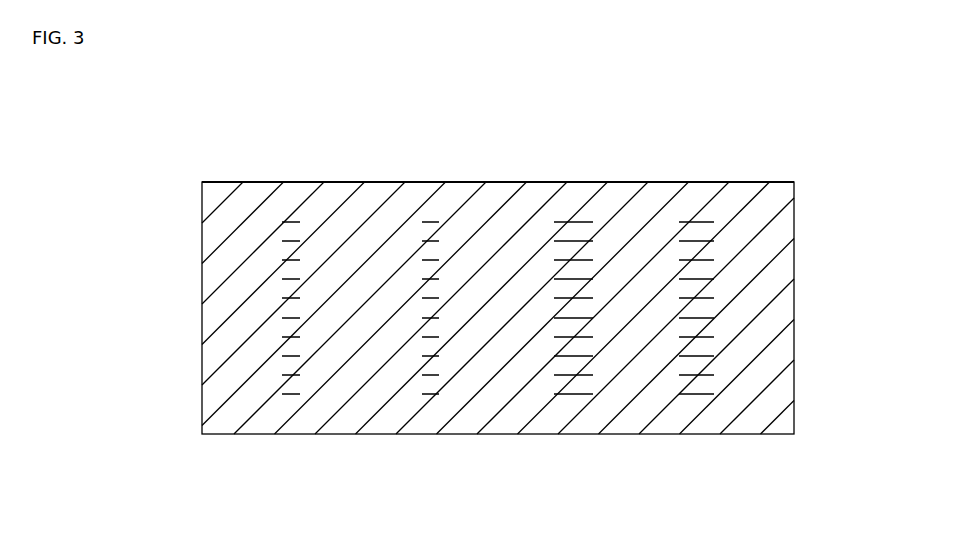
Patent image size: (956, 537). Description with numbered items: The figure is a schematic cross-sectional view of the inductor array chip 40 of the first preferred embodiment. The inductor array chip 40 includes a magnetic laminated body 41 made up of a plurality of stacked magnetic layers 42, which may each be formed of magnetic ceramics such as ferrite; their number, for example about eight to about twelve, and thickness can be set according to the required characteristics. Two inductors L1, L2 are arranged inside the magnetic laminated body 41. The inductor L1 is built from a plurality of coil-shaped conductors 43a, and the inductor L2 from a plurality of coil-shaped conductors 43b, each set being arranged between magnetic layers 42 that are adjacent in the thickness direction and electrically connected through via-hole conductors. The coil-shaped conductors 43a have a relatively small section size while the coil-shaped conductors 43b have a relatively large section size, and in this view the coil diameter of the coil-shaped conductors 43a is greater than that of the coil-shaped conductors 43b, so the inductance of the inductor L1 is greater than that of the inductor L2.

The inductor array chip 40 is at (775, 145).
The magnetic laminated body 41 is at (586, 182).
The magnetic layers 42 is at (700, 230).
The coil-shaped conductors 43a is at (290, 396).
The coil-shaped conductors 43b is at (575, 396).
The inductor L1 is at (291, 218).
The inductor L2 is at (560, 220).